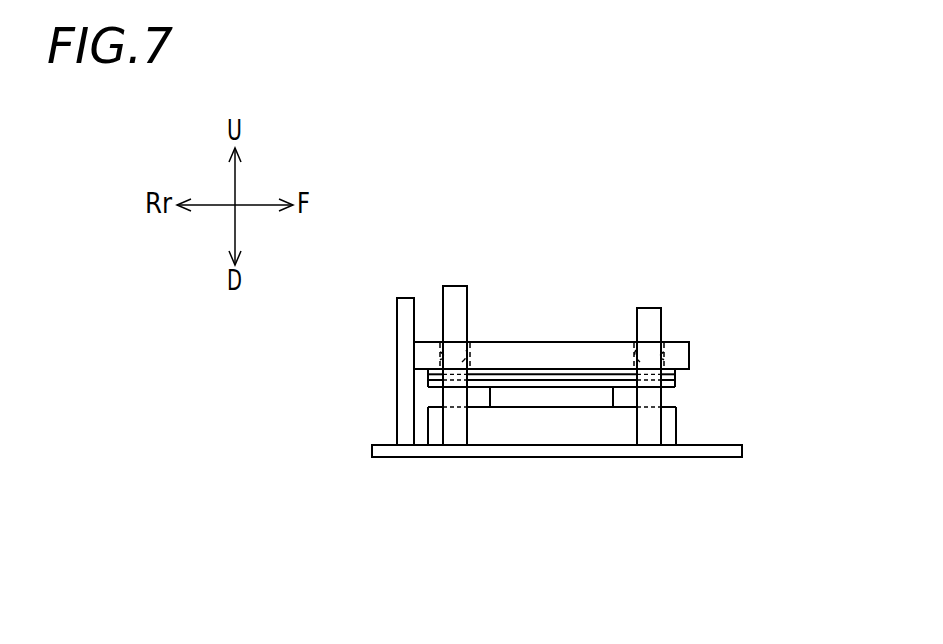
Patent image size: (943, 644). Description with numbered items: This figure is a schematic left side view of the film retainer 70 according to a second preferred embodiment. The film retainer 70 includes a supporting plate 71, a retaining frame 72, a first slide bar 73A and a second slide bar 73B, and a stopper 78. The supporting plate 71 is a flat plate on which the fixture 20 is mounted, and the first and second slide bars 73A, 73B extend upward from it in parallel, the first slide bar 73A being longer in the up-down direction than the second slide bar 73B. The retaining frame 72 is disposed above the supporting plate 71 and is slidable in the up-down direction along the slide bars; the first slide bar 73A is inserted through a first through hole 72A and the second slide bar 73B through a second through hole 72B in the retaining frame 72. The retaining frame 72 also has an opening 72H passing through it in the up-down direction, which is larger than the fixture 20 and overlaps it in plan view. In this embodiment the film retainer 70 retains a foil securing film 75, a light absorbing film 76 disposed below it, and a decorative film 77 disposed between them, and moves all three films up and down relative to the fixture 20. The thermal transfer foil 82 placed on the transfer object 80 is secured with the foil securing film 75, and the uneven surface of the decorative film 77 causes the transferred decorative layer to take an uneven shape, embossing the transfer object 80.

The film retainer 70 is at (767, 270).
The fixture 20 is at (540, 447).
The supporting plate 71 is at (730, 445).
The retaining frame 72 is at (540, 342).
The first through hole 72A is at (462, 365).
The second through hole 72B is at (640, 362).
The opening 72H is at (440, 346).
The first slide bar 73A is at (457, 286).
The second slide bar 73B is at (655, 308).
The foil securing film 75 is at (668, 369).
The light absorbing film 76 is at (675, 385).
The decorative film 77 is at (675, 377).
The stopper 78 is at (404, 298).
The transfer object 80 is at (521, 400).
The thermal transfer foil 82 is at (578, 400).